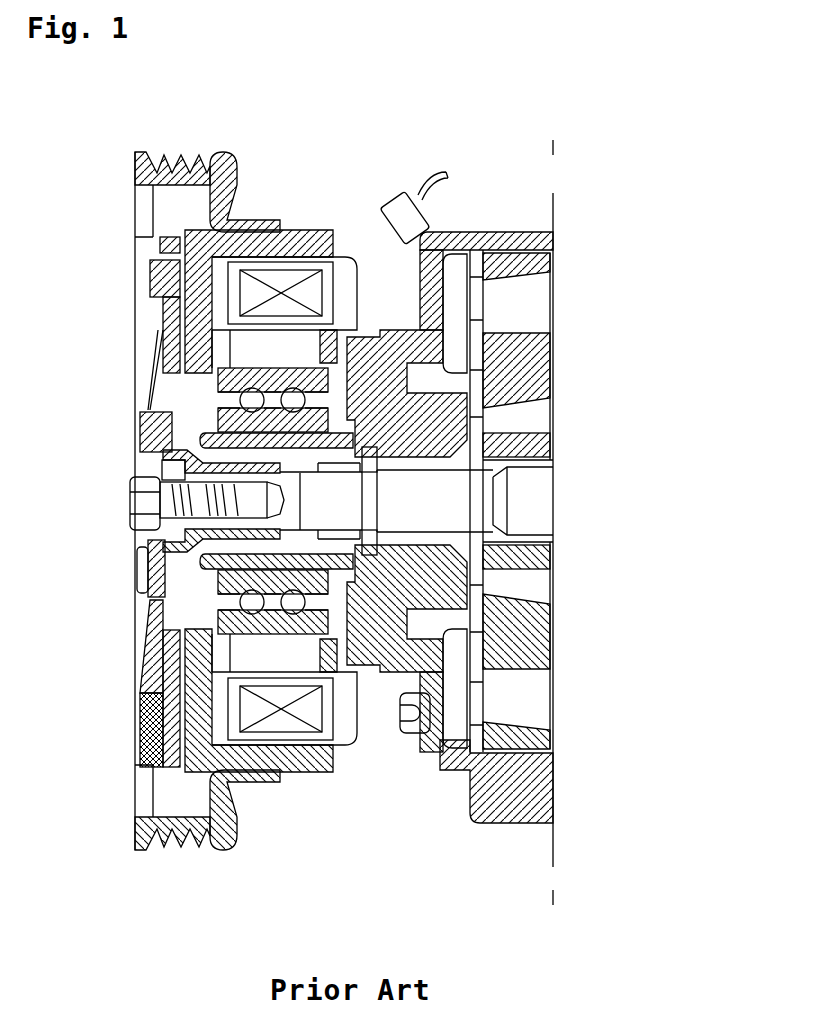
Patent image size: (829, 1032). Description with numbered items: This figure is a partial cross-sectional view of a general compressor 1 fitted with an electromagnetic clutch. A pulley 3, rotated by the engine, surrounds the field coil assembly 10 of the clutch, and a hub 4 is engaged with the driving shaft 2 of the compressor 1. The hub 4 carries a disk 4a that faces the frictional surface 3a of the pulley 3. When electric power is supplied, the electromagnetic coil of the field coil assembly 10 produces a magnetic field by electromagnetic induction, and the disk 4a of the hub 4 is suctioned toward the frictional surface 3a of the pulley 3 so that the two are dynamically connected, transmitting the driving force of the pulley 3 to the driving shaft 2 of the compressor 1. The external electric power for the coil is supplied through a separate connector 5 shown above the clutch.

The compressor 1 is at (489, 220).
The driving shaft 2 is at (540, 514).
The pulley 3 is at (185, 158).
The frictional surface 3a is at (175, 276).
The hub 4 is at (137, 570).
The disk 4a is at (165, 334).
The connector 5 is at (400, 212).
The field coil assembly 10 is at (366, 764).